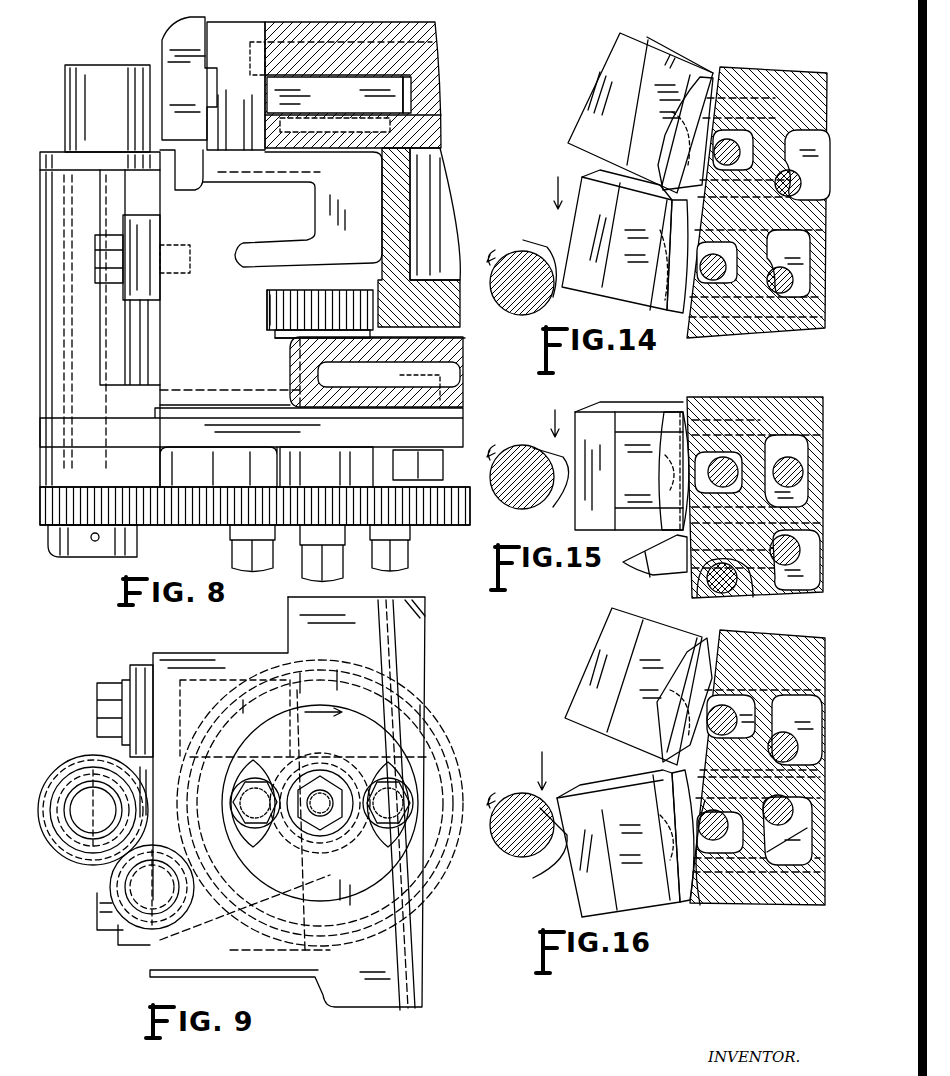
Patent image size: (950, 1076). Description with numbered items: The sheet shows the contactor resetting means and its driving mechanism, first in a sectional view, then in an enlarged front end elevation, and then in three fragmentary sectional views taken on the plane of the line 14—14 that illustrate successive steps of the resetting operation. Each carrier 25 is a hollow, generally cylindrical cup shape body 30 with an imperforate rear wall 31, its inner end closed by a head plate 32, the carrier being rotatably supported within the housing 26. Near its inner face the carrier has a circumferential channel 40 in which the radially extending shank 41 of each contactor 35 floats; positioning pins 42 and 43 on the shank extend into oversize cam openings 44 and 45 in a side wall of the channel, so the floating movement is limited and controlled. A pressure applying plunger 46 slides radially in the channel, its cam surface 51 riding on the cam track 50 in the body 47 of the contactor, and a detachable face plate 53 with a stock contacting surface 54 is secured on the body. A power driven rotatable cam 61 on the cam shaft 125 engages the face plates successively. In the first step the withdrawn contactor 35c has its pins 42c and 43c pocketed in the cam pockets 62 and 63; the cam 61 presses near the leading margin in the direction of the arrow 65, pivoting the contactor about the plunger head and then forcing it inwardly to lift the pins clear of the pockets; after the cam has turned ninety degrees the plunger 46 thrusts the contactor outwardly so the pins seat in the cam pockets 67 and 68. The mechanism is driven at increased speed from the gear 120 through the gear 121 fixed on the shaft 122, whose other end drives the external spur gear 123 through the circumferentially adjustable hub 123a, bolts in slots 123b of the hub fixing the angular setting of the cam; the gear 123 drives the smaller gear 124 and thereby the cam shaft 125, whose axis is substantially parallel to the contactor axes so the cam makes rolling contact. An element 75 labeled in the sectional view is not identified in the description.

In FIG. 8, the section line 14 is at (52, 148).
In FIG. 8, the carrier 25 is at (442, 128).
In FIG. 14, the carrier 25 is at (800, 337).
In FIG. 15, the carrier 25 is at (755, 497).
In FIG. 16, the carrier 25 is at (735, 903).
In FIG. 8, the housing 26 is at (465, 342).
In FIG. 9, the housing 26 is at (288, 628).
In FIG. 8, the cup shape body 30 is at (382, 268).
In FIG. 8, the imperforate rear wall 31 is at (460, 305).
In FIG. 8, the head plate 32 is at (448, 78).
In FIG. 8, the contactor 35 is at (185, 17).
In FIG. 14, the contactor 35 is at (680, 55).
In FIG. 14, the contactor 35c is at (608, 300).
In FIG. 15, the contactor 35c is at (593, 417).
In FIG. 16, the contactor 35c is at (597, 788).
In FIG. 8, the circumferential channel 40 is at (412, 92).
In FIG. 8, the shank 41 is at (339, 95).
In FIG. 14, the shank 41 is at (811, 145).
In FIG. 14, the positioning pin 42 is at (797, 130).
In FIG. 14, the positioning pin 42c is at (810, 337).
In FIG. 14, the positioning pin 43 is at (730, 130).
In FIG. 14, the positioning pin 43c is at (708, 337).
In FIG. 14, the cam opening 44 is at (805, 130).
In FIG. 14, the cam opening 45 is at (740, 130).
In FIG. 8, the pressure applying plunger 46 is at (438, 30).
In FIG. 14, the pressure applying plunger 46 is at (740, 337).
In FIG. 8, the contactor body 47 is at (198, 192).
In FIG. 14, the cam track 50 is at (678, 312).
In FIG. 16, the cam track 50 is at (684, 900).
In FIG. 8, the cam surface 51 is at (236, 86).
In FIG. 14, the cam surface 51 is at (680, 113).
In FIG. 16, the cam surface 51 is at (712, 638).
In FIG. 8, the face plate 53 is at (189, 78).
In FIG. 15, the stock contacting surface 54 is at (623, 610).
In FIG. 16, the stock contacting surface 54 is at (625, 608).
In FIG. 8, the rotatable cam 61 is at (135, 64).
In FIG. 14, the rotatable cam 61 is at (530, 245).
In FIG. 15, the rotatable cam 61 is at (560, 497).
In FIG. 16, the rotatable cam 61 is at (543, 865).
In FIG. 15, the cam pocket 62 is at (785, 592).
In FIG. 16, the cam pocket 62 is at (782, 905).
In FIG. 15, the cam pocket 63 is at (707, 483).
In FIG. 16, the cam pocket 63 is at (705, 903).
In FIG. 14, the arrow 65 is at (569, 296).
In FIG. 15, the cam pocket 67 is at (787, 437).
In FIG. 16, the cam pocket 67 is at (797, 695).
In FIG. 15, the cam pocket 68 is at (707, 453).
In FIG. 8, the cam lever 75 is at (278, 236).
In FIG. 8, the gear 120 is at (320, 290).
In FIG. 8, the gear 121 is at (265, 292).
In FIG. 8, the shaft 122 is at (290, 342).
In FIG. 8, the external spur gear 123 is at (468, 525).
In FIG. 9, the external spur gear 123 is at (412, 735).
In FIG. 8, the driving hub 123a is at (228, 538).
In FIG. 9, the driving hub 123a is at (415, 765).
In FIG. 9, the slots 123b is at (265, 767).
In FIG. 8, the smaller gear 124 is at (56, 545).
In FIG. 9, the smaller gear 124 is at (94, 754).
In FIG. 8, the cam shaft 125 is at (60, 360).
In FIG. 9, the cam shaft 125 is at (85, 835).